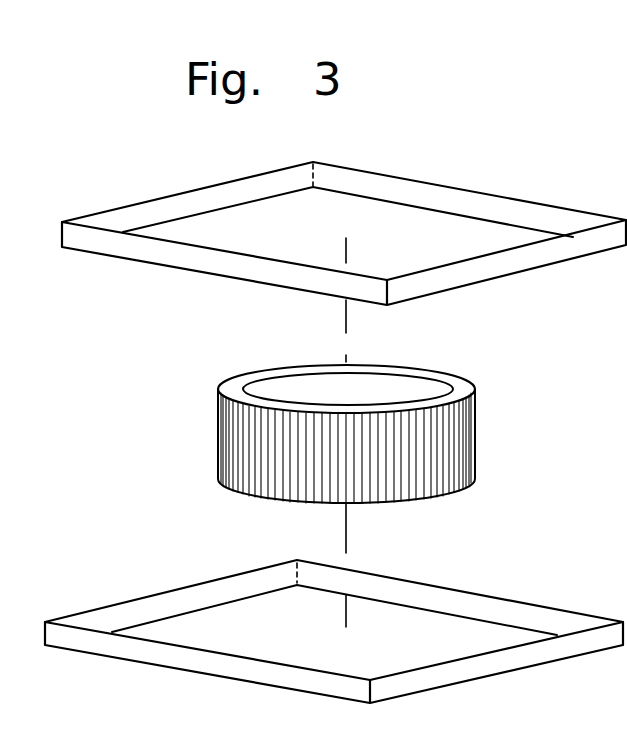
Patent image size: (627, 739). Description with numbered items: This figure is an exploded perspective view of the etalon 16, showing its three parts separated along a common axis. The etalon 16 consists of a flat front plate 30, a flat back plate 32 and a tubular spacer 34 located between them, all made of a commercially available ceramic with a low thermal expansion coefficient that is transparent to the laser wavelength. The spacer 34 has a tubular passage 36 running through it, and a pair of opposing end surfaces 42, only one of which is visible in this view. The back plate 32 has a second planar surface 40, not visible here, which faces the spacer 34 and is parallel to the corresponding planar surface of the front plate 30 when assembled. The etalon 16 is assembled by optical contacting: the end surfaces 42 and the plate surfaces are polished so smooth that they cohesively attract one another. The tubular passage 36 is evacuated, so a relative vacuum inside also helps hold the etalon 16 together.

The etalon 16 is at (543, 189).
The front plate 30 is at (177, 267).
The back plate 32 is at (482, 592).
The tubular spacer 34 is at (477, 428).
The tubular passage 36 is at (373, 388).
The second planar surface 40 is at (200, 582).
The opposing end surfaces 42 is at (462, 388).